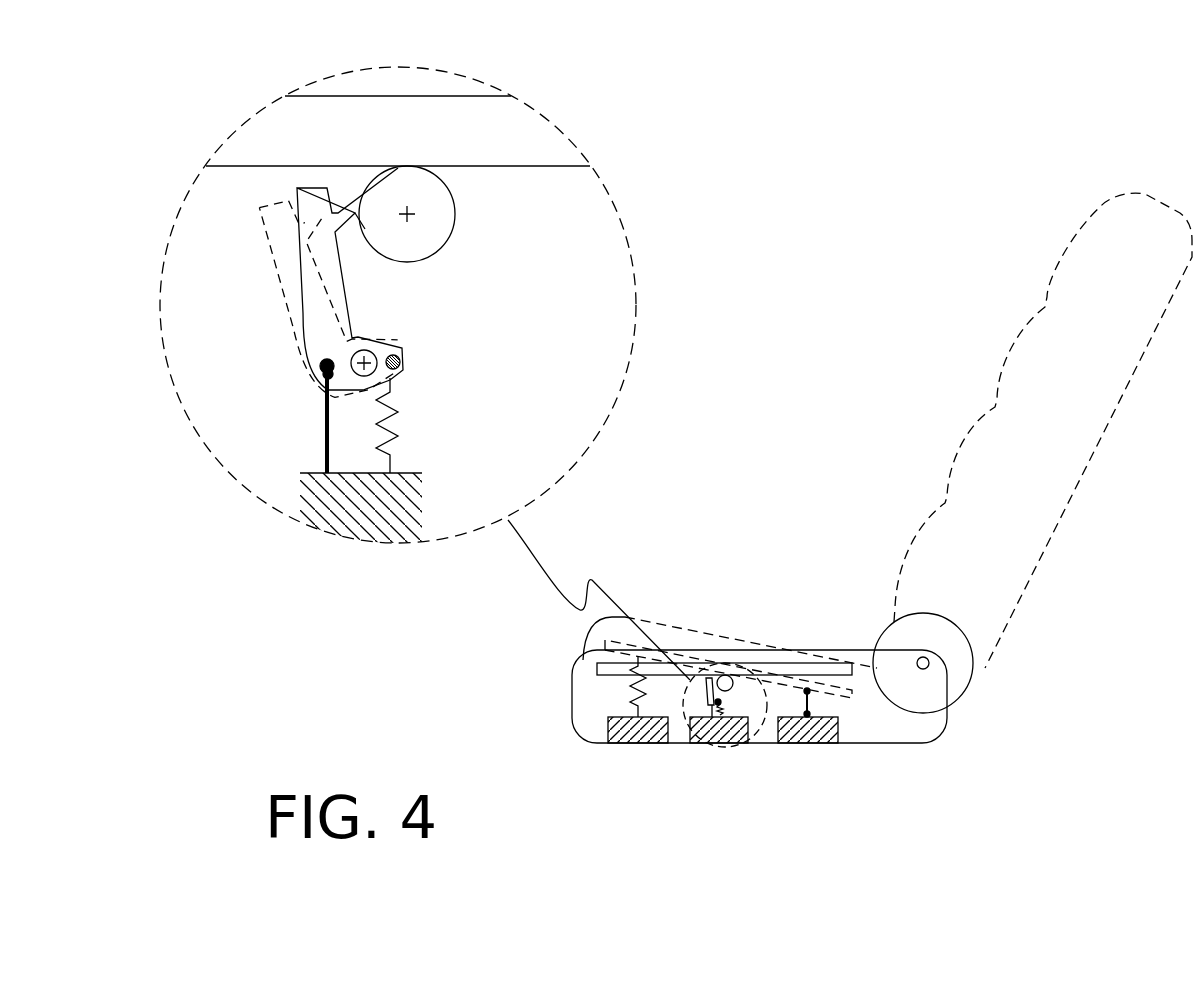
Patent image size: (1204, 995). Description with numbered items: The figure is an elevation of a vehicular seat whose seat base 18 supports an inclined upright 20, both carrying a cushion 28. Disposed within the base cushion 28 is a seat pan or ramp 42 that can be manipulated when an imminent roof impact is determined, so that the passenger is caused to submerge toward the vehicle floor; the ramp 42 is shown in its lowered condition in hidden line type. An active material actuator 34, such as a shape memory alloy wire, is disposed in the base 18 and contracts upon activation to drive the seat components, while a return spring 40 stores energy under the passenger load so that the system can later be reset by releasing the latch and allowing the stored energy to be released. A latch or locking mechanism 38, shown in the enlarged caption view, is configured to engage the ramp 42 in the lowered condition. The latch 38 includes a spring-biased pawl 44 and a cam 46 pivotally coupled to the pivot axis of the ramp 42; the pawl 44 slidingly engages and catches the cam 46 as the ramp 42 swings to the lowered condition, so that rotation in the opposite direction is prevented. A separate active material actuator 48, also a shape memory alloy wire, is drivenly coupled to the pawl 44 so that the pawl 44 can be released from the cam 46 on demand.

The seat base 18 is at (670, 743).
The upright 20 is at (1113, 345).
The cushion 28 is at (700, 630).
The active material actuator 34 is at (783, 742).
The latch or locking mechanism 38 is at (662, 198).
The return spring 40 is at (633, 702).
The seat pan or ramp 42 is at (519, 155).
The spring-biased pawl 44 is at (307, 317).
The cam 46 is at (447, 242).
The active material actuator 48 is at (327, 403).